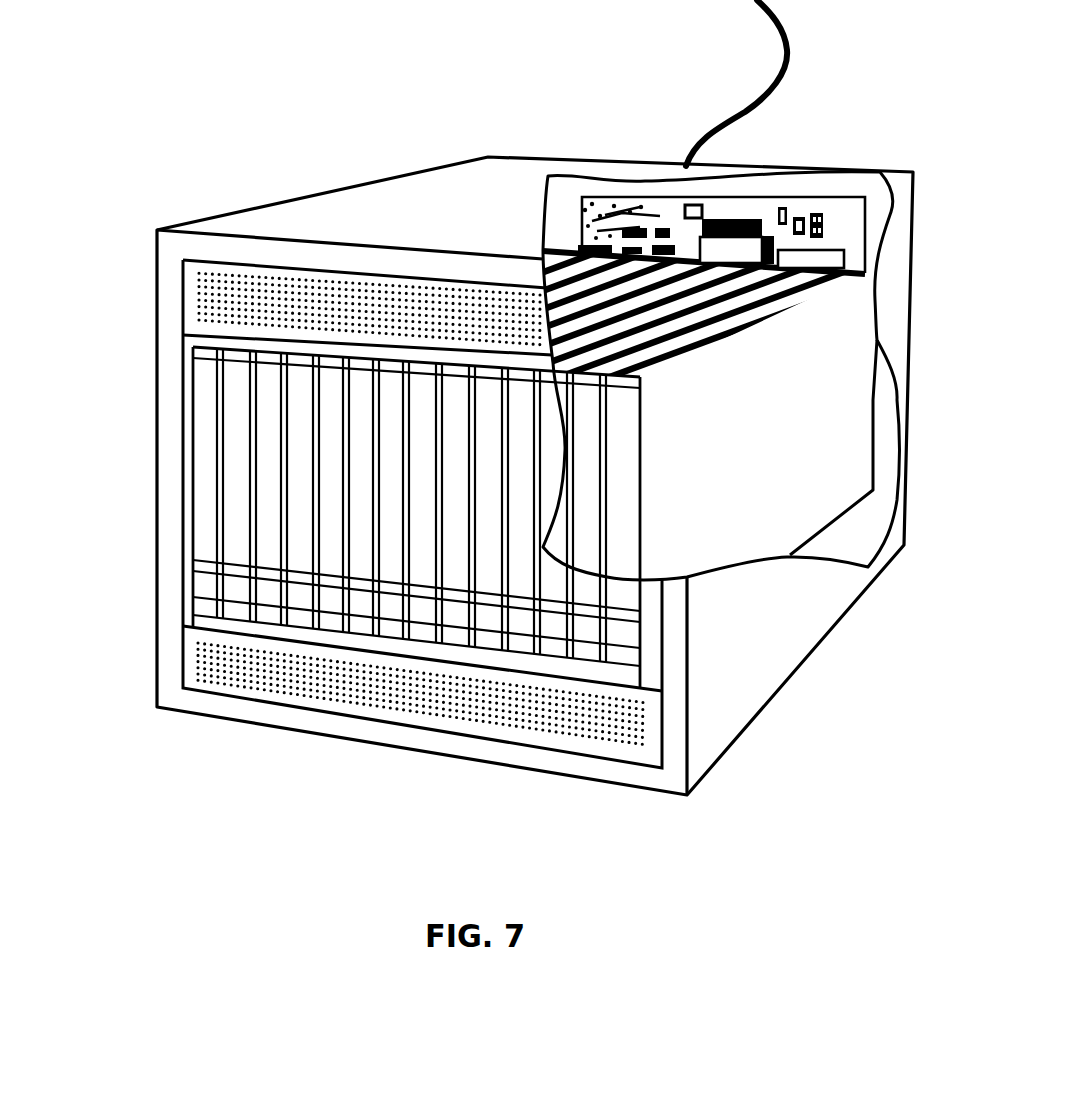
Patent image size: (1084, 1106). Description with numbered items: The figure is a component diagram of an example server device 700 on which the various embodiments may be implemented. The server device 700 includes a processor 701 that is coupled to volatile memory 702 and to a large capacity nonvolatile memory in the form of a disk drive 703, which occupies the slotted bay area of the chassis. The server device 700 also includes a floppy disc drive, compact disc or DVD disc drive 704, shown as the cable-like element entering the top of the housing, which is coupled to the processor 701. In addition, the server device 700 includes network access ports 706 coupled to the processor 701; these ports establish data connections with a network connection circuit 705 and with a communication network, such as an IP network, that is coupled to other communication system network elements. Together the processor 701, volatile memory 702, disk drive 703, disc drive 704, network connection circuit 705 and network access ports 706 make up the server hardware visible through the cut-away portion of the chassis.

The server device 700 is at (390, 178).
The processor 701 is at (729, 252).
The volatile memory 702 is at (835, 263).
The disk drive 703 is at (267, 430).
The disc drive 704 is at (788, 36).
The network connection circuit 705 is at (578, 247).
The network access ports 706 is at (800, 214).